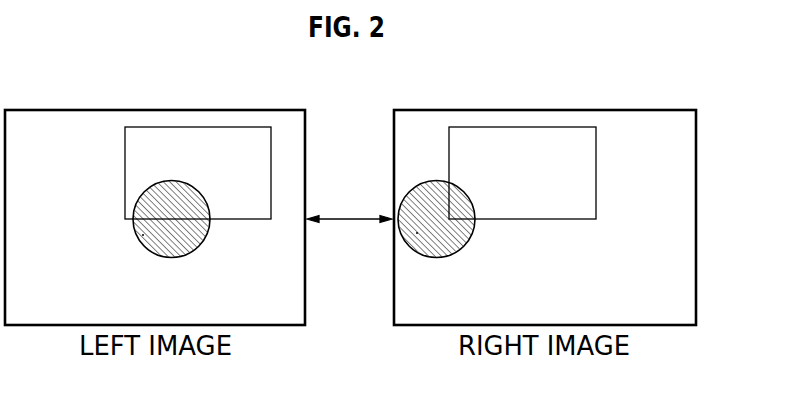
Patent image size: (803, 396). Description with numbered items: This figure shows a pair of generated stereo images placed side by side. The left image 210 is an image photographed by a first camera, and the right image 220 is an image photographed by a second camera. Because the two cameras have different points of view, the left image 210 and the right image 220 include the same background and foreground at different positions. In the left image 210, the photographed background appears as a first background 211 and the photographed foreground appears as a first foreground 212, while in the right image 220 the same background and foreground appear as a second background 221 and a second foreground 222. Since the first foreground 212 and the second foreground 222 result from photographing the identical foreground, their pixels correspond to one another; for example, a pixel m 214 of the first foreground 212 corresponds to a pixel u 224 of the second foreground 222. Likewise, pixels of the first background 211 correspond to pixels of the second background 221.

The left image 210 is at (157, 110).
The first background 211 is at (125, 173).
The first foreground 212 is at (205, 237).
The pixel m 214 is at (143, 235).
The right image 220 is at (545, 110).
The second background 221 is at (596, 173).
The second foreground 222 is at (468, 238).
The pixel u 224 is at (417, 233).